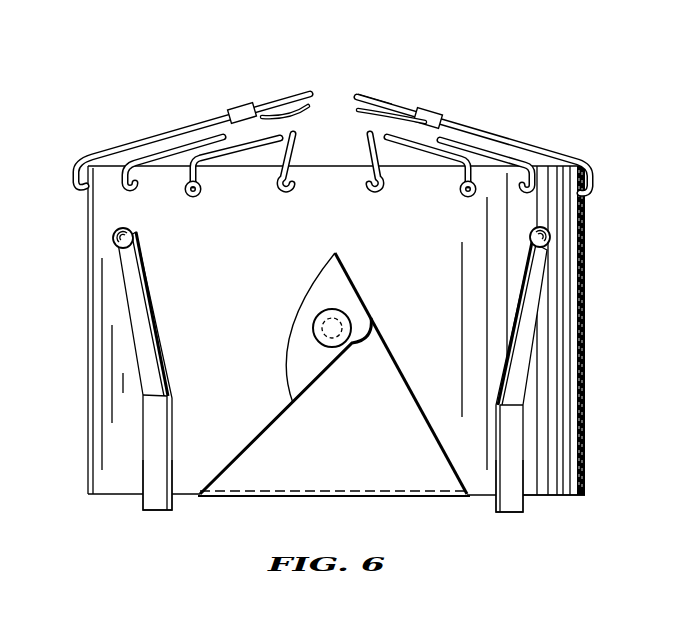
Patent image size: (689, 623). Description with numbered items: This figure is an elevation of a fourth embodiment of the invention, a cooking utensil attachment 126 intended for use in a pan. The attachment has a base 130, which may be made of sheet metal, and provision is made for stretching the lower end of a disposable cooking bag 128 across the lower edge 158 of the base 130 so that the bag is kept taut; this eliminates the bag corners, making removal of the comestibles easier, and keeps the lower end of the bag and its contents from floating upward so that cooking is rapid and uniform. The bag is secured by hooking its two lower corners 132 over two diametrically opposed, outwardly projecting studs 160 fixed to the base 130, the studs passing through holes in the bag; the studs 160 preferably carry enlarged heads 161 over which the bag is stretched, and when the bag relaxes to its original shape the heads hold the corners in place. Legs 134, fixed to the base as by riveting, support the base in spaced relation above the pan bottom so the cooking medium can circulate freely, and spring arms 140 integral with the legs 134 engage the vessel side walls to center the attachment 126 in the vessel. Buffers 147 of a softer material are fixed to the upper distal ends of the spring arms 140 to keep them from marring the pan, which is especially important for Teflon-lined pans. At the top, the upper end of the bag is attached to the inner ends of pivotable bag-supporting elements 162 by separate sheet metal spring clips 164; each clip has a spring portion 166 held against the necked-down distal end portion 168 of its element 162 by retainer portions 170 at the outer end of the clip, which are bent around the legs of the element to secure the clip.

The cooking utensil attachment 126 is at (190, 72).
The disposable cooking bag 128 is at (249, 431).
The attachment base 130 is at (80, 340).
The lower corners of the bag 132 is at (315, 270).
The legs 134 is at (150, 463).
The spring arms 140 is at (158, 330).
The buffers 147 is at (135, 234).
The lower edge of the base 158 is at (543, 496).
The studs 160 is at (343, 318).
The enlarged heads 161 is at (317, 337).
The bag-supporting elements 162 is at (175, 116).
The spring clips 164 is at (299, 129).
The spring portion 166 is at (377, 113).
The necked down distal end portions 168 is at (390, 101).
The retainer portions 170 is at (430, 111).